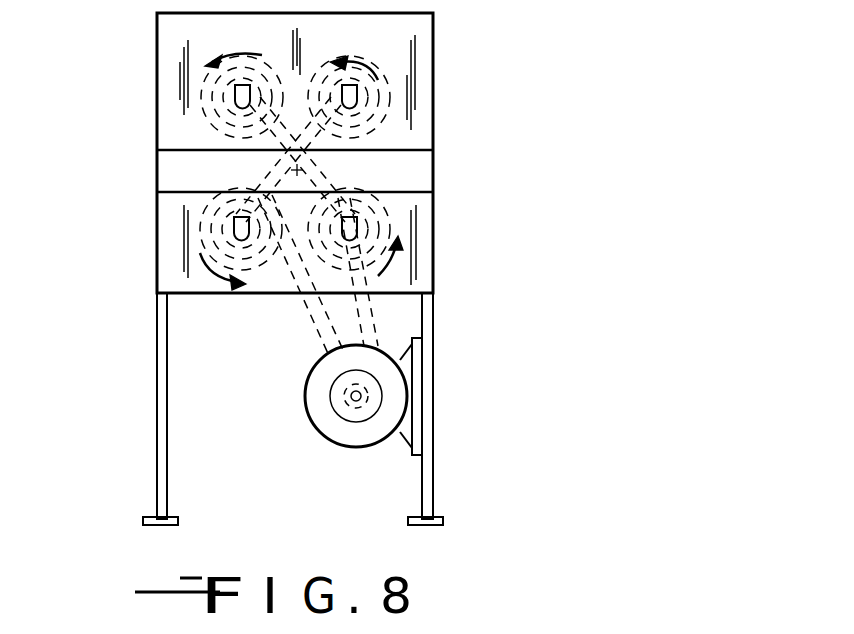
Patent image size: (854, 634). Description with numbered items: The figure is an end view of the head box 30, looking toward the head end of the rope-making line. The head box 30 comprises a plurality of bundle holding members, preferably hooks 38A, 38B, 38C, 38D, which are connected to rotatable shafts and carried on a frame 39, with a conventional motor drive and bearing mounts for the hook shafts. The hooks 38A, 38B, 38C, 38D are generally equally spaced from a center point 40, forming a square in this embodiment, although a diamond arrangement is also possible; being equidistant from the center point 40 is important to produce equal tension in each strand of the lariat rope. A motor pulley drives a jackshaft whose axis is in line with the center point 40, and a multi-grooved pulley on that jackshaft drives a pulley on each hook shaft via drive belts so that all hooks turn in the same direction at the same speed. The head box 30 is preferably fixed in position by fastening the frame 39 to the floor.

The head box 30 is at (435, 42).
The hook 38A is at (233, 97).
The hook 38B is at (232, 229).
The hook 38C is at (358, 222).
The hook 38D is at (358, 97).
The frame 39 is at (420, 172).
The center point 40 is at (297, 170).